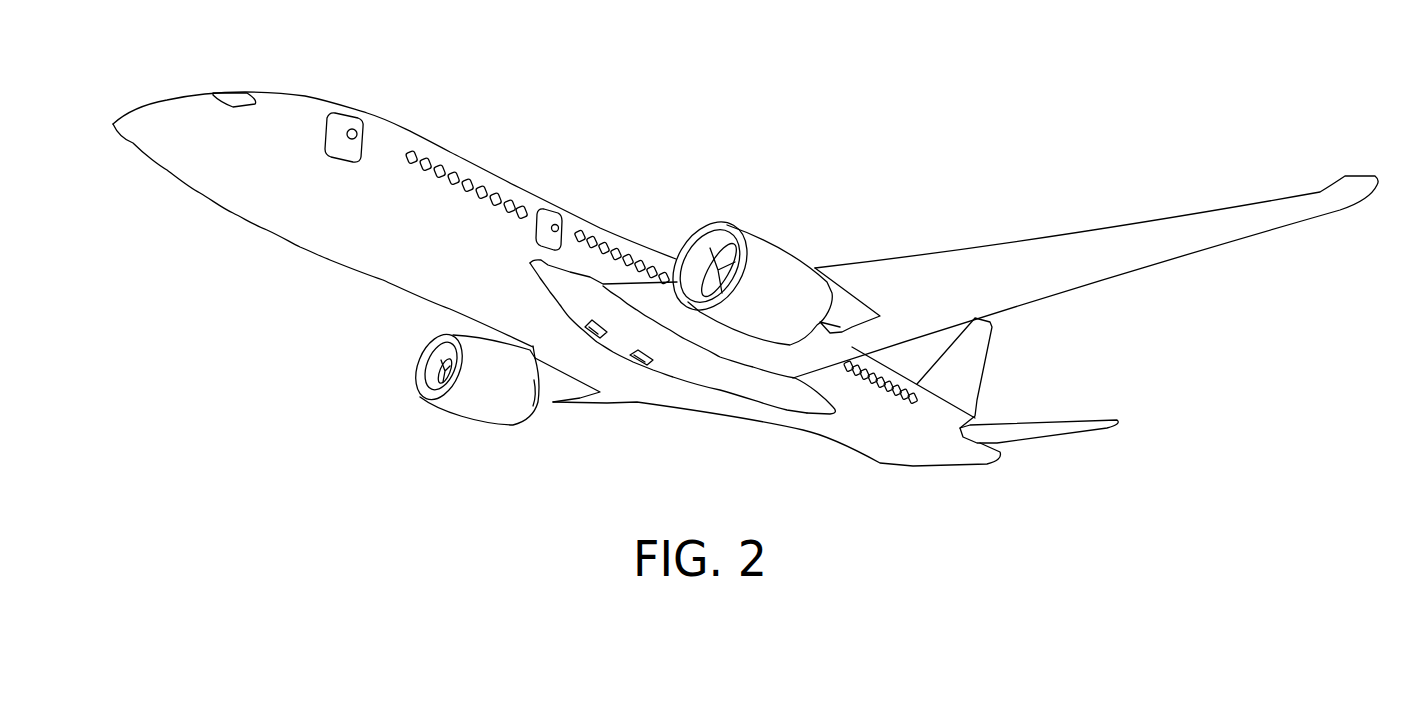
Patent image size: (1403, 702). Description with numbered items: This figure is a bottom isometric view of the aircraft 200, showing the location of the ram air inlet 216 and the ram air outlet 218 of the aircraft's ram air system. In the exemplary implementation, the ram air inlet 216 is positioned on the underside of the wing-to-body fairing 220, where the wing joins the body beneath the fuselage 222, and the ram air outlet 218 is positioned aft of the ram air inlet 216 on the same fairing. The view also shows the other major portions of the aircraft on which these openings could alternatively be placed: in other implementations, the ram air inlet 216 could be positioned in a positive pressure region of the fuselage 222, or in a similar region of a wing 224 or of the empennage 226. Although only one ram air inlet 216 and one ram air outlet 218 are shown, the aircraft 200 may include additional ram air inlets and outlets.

The aircraft 200 is at (750, 136).
The fuselage 222 is at (302, 93).
The wing-to-body fairing 220 is at (578, 282).
The wing 224 is at (1067, 236).
The empennage 226 is at (975, 414).
The ram air inlet 216 is at (590, 335).
The ram air outlet 218 is at (637, 363).